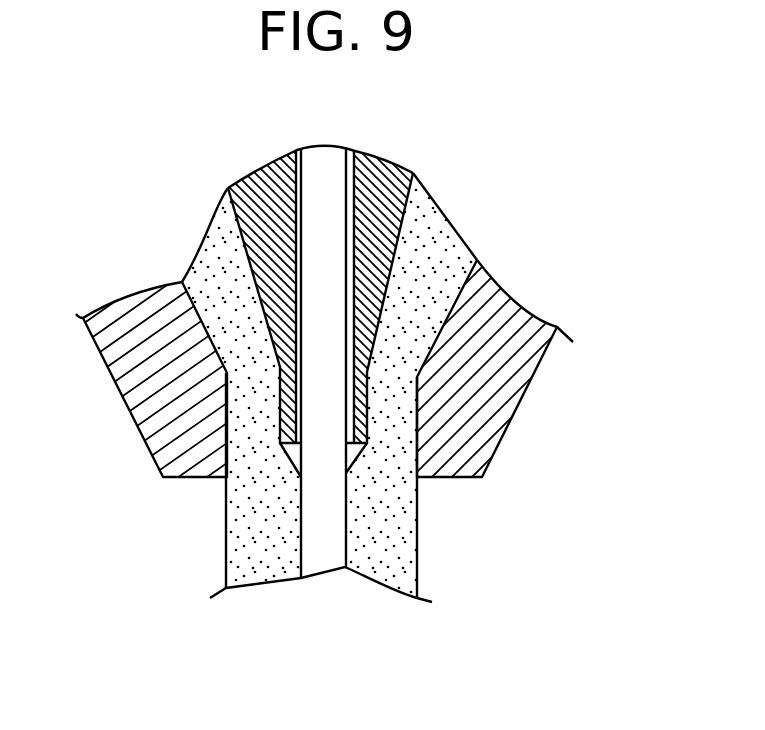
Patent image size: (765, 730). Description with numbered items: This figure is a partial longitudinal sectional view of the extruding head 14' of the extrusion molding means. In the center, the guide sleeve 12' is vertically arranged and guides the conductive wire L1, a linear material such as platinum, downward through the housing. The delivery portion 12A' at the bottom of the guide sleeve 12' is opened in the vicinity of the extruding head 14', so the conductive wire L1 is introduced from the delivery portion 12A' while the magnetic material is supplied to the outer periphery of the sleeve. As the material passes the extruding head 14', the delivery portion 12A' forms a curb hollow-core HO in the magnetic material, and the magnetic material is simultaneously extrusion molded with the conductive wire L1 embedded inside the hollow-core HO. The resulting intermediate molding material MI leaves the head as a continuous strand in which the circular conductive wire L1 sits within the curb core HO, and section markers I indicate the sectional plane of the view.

The guide sleeve 12' is at (374, 325).
The delivery portion 12A' is at (382, 387).
The extruding head 14' is at (347, 371).
The curb hollow-core HO is at (292, 448).
The intermediate molding material MI is at (417, 528).
The conductive wire L1 is at (325, 557).
The section line I is at (42, 475).